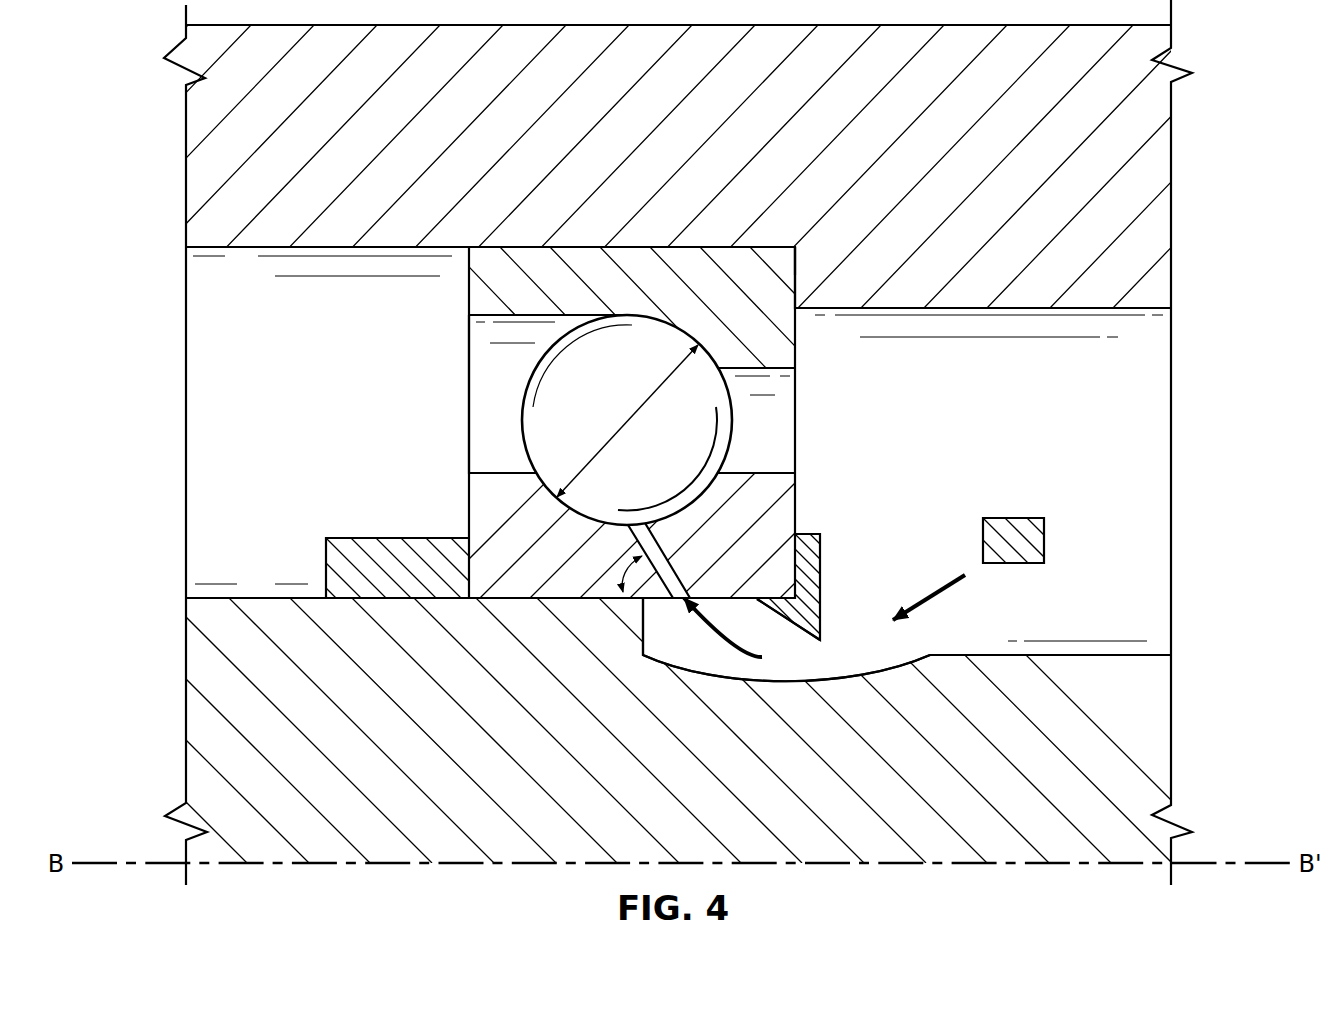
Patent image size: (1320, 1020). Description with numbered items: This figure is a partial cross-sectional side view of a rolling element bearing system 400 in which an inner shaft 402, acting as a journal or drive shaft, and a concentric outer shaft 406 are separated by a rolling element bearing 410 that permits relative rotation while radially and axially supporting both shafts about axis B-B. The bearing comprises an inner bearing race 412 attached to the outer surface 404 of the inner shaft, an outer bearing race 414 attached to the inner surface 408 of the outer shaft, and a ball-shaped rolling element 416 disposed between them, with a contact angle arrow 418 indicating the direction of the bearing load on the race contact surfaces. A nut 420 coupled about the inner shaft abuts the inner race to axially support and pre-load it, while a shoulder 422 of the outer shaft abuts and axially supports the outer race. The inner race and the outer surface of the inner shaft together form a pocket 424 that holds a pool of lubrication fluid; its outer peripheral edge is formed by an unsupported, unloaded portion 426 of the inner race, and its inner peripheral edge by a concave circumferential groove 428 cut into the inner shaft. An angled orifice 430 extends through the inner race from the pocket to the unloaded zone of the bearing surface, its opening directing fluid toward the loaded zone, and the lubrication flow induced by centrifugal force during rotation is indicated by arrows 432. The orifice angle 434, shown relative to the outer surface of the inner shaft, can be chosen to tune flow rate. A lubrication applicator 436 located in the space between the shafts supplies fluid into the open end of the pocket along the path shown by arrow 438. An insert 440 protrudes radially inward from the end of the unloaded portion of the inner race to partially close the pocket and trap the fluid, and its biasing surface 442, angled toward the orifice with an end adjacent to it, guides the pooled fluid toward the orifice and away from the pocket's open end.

The rolling element bearing system 400 is at (1243, 130).
The inner shaft 402 is at (403, 742).
The outer surface of the inner shaft 404 is at (255, 594).
The outer shaft 406 is at (597, 140).
The inner surface of the outer shaft 408 is at (244, 253).
The rolling element bearing 410 is at (425, 356).
The inner bearing race 412 is at (477, 485).
The outer bearing race 414 is at (695, 304).
The rolling element 416 is at (522, 418).
The contact angle arrow 418 is at (630, 418).
The nut 420 is at (348, 548).
The shoulder 422 is at (786, 261).
The pocket 424 is at (856, 617).
The unloaded portion of the inner race 426 is at (787, 505).
The circumferential groove 428 is at (852, 669).
The orifice 430 is at (659, 551).
The lubrication flow arrows 432 is at (732, 650).
The angle of the orifice 434 is at (628, 572).
The lubrication applicator 436 is at (1015, 518).
The lubrication supply arrow 438 is at (940, 610).
The insert 440 is at (813, 560).
The biasing surface 442 is at (791, 638).